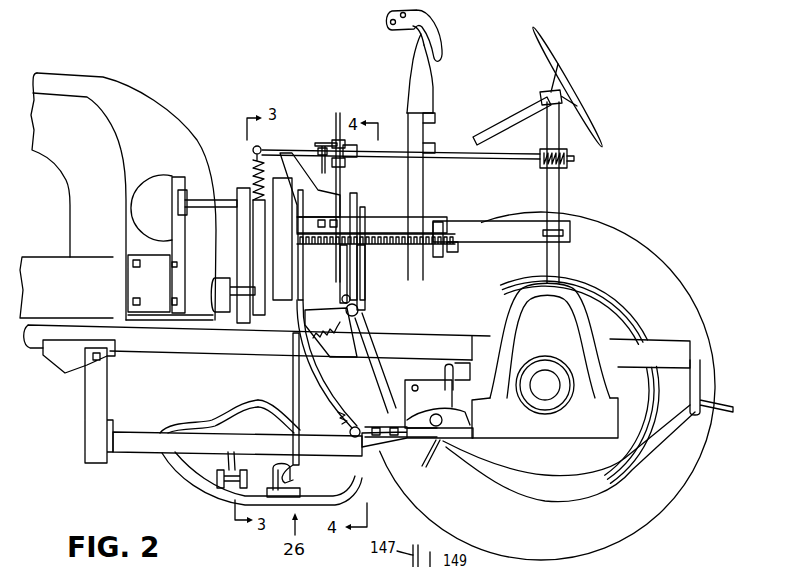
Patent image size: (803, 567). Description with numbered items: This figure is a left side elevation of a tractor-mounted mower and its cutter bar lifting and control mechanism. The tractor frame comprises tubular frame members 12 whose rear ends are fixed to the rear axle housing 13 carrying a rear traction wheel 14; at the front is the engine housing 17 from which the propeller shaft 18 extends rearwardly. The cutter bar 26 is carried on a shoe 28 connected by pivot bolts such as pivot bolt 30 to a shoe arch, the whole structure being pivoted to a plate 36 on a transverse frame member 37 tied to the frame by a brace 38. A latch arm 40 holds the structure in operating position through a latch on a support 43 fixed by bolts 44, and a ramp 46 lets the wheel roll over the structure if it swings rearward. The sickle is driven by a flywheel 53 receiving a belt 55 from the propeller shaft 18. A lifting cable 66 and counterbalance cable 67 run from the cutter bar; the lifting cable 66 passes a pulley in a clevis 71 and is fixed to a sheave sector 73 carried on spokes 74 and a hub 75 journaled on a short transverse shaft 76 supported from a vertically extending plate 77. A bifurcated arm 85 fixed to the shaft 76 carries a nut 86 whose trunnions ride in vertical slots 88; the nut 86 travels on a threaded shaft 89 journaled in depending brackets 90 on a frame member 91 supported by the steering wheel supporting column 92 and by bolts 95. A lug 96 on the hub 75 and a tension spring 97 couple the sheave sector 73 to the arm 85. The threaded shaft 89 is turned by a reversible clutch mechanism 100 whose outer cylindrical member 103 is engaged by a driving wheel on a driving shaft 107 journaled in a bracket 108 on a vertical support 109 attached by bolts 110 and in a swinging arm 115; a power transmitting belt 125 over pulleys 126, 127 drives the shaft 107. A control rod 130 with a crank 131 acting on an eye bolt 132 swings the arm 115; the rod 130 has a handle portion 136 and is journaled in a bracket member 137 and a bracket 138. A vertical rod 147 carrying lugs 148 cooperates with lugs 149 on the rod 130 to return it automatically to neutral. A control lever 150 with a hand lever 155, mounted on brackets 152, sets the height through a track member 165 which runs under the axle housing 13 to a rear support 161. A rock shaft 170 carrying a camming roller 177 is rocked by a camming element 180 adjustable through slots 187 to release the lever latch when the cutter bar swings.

The tubular frame member 12 is at (174, 346).
The rear axle housing 13 is at (582, 312).
The rear traction wheel 14 is at (693, 308).
The engine housing 17 is at (99, 197).
The propeller shaft 18 is at (231, 292).
The cutter bar 26 is at (283, 481).
The shoe 28 is at (218, 500).
The pivot bolt 30 is at (216, 480).
The plate 36 is at (475, 440).
The transverse frame member 37 is at (473, 421).
The brace 38 is at (380, 380).
The latch arm 40 is at (137, 444).
The support 43 is at (100, 386).
The bolt 44 is at (109, 358).
The ramp 46 is at (209, 414).
The flywheel 53 is at (281, 403).
The belt 55 is at (304, 372).
The lifting cable 66 is at (330, 381).
The counterbalance cable 67 is at (362, 217).
The clevis 71 is at (353, 420).
The sheave sector 73 is at (357, 355).
The spoke 74 is at (363, 320).
The hub 75 is at (358, 312).
The short transverse shaft 76 is at (342, 300).
The vertically extending plate 77 is at (294, 178).
The bifurcated arm 85 is at (363, 237).
The nut 86 is at (363, 229).
The vertical slot 88 is at (355, 207).
The threaded shaft 89 is at (430, 220).
The depending bracket 90 is at (446, 252).
The frame member 91 is at (442, 222).
The steering wheel supporting column 92 is at (553, 213).
The bolt 95 is at (325, 246).
The lug 96 is at (356, 273).
The tension spring 97 is at (330, 339).
The reversible clutch mechanism 100 is at (241, 168).
The outer cylindrical member 103 is at (280, 178).
The driving shaft 107 is at (218, 195).
The bracket 108 is at (190, 228).
The vertical support 109 is at (173, 227).
The bolt 110 is at (172, 302).
The arm 115 is at (278, 320).
The power transmitting belt 125 is at (241, 238).
The pulley 126 is at (230, 310).
The pulley 127 is at (238, 194).
The control rod 130 is at (450, 157).
The crank 131 is at (253, 151).
The eye bolt 132 is at (429, 550).
The handle portion 136 is at (574, 162).
The bracket member 137 is at (301, 143).
The bracket 138 is at (573, 154).
The vertical rod 147 is at (340, 118).
The lug 148 is at (346, 160).
The lug 149 is at (345, 152).
The control lever 150 is at (417, 78).
The bracket 152 is at (455, 365).
The hand lever 155 is at (434, 37).
The rear support 161 is at (701, 378).
The track member 165 is at (542, 468).
The rock shaft 170 is at (455, 388).
The camming roller 177 is at (437, 450).
The camming element 180 is at (453, 390).
The slot 187 is at (381, 431).